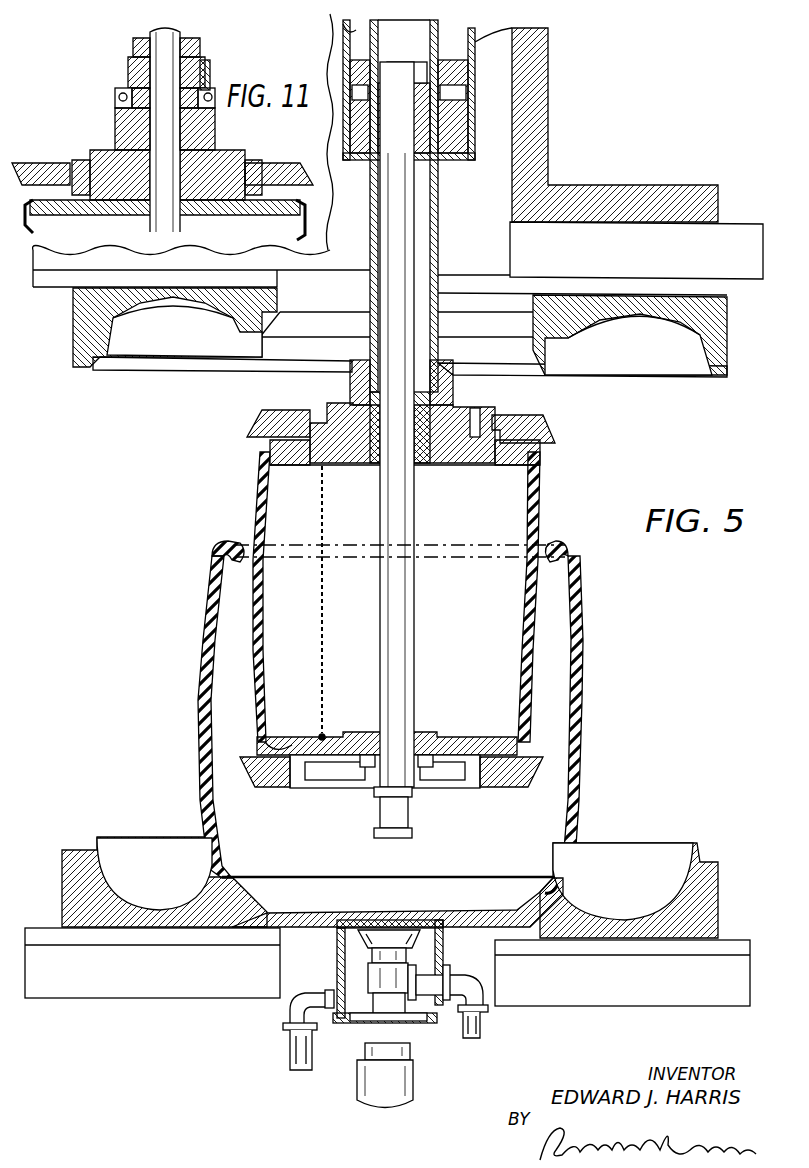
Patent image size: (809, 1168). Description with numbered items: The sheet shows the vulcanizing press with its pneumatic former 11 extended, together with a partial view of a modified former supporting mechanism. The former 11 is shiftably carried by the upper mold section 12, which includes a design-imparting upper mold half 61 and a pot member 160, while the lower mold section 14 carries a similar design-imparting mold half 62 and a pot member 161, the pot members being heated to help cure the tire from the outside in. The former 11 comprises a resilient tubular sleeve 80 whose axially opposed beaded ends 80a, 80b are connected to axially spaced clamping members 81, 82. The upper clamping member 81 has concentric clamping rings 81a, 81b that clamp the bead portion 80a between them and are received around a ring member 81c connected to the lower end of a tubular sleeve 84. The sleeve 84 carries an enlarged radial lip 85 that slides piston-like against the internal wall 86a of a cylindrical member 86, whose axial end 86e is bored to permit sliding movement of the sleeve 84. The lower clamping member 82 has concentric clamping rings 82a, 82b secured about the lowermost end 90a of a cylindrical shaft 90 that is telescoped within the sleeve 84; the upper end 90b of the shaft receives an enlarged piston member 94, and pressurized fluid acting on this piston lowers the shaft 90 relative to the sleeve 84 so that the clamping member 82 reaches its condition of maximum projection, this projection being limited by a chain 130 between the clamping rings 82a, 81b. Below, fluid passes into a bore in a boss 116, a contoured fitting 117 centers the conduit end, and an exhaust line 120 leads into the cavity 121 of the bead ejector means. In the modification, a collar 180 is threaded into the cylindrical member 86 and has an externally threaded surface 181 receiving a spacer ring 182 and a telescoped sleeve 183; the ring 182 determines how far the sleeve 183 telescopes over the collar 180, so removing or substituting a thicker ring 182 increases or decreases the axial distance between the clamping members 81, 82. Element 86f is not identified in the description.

In FIG. 11, the pneumatic former 11 is at (31, 222).
In FIG. 5, the pneumatic former 11 is at (547, 497).
In FIG. 5, the upper mold section 12 is at (655, 183).
In FIG. 5, the lower mold section 14 is at (78, 1002).
In FIG. 5, the upper mold half 61 is at (80, 368).
In FIG. 5, the lower mold half 62 is at (70, 848).
In FIG. 11, the resilient tubular sleeve 80 is at (292, 226).
In FIG. 5, the resilient tubular sleeve 80 is at (257, 500).
In FIG. 11, the beaded end 80a is at (64, 162).
In FIG. 5, the beaded end 80a is at (290, 438).
In FIG. 5, the beaded end 80b is at (290, 740).
In FIG. 11, the clamping member 81 is at (262, 160).
In FIG. 5, the clamping member 81 is at (455, 472).
In FIG. 5, the clamping ring 81a is at (542, 416).
In FIG. 5, the clamping ring 81b is at (486, 414).
In FIG. 5, the ring member 81c is at (455, 397).
In FIG. 5, the clamping member 82 is at (455, 740).
In FIG. 5, the clamping ring 82a is at (422, 735).
In FIG. 5, the clamping ring 82b is at (502, 790).
In FIG. 11, the tubular sleeve 84 is at (172, 228).
In FIG. 5, the tubular sleeve 84 is at (438, 252).
In FIG. 5, the radial lip 85 is at (476, 90).
In FIG. 11, the cylindrical member 86 is at (133, 46).
In FIG. 5, the cylindrical member 86 is at (343, 35).
In FIG. 5, the internal wall 86a is at (351, 50).
In FIG. 5, the axial end 86e is at (350, 128).
In FIG. 11, the cap ring 86f is at (133, 68).
In FIG. 5, the cylindrical shaft 90 is at (392, 588).
In FIG. 5, the lowermost end 90a is at (376, 796).
In FIG. 5, the upper end 90b is at (412, 205).
In FIG. 5, the piston member 94 is at (425, 118).
In FIG. 5, the boss 116 is at (368, 980).
In FIG. 5, the contoured fitting 117 is at (356, 940).
In FIG. 5, the exhaust line 120 is at (290, 1058).
In FIG. 5, the cavity 121 is at (420, 1005).
In FIG. 5, the chain 130 is at (323, 652).
In FIG. 5, the pot member 160 is at (747, 225).
In FIG. 5, the pot member 161 is at (580, 993).
In FIG. 11, the collar 180 is at (205, 78).
In FIG. 11, the externally threaded surface 181 is at (118, 122).
In FIG. 11, the spacer ring 182 is at (118, 97).
In FIG. 11, the telescoped sleeve 183 is at (212, 140).